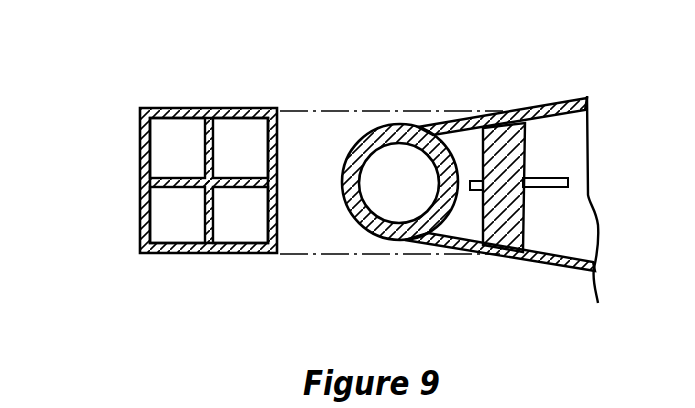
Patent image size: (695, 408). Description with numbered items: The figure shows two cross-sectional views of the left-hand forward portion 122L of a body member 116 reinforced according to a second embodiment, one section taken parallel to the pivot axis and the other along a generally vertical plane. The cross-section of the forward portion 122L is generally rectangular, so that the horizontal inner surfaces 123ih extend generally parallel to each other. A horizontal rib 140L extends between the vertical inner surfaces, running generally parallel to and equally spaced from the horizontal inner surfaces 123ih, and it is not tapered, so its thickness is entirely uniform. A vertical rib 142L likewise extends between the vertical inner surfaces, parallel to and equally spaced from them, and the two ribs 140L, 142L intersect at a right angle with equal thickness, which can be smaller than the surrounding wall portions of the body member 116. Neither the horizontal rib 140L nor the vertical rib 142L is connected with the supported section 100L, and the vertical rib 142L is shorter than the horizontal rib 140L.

The body member 116 is at (233, 107).
The horizontal inner surfaces 123ih is at (263, 147).
The forward portion 122L is at (140, 227).
The horizontal rib 140L is at (163, 186).
The vertical rib 142L is at (212, 213).
The supported section 100L is at (390, 238).